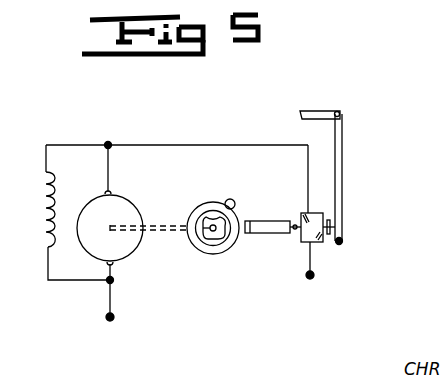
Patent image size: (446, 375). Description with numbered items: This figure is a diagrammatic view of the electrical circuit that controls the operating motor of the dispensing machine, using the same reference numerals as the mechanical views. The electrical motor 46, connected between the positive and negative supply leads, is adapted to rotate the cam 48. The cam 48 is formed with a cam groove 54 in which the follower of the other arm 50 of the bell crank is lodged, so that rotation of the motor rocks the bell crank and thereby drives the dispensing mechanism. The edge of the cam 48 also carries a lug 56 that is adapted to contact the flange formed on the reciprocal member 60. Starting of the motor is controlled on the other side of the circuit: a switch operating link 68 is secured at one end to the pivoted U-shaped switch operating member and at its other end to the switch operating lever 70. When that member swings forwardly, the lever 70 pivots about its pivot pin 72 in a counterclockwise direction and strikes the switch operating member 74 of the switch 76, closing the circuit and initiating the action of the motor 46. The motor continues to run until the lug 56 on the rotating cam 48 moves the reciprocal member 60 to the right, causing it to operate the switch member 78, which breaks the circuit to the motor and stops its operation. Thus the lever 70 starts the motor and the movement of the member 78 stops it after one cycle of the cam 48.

The electrical motor 46 is at (130, 252).
The cam 48 is at (200, 204).
The other arm of the bell crank 50 is at (214, 250).
The cam groove 54 is at (213, 254).
The lug 56 is at (236, 208).
The reciprocal member 60 is at (276, 221).
The switch operating link 68 is at (316, 111).
The switch operating lever 70 is at (346, 182).
The pivot pin 72 is at (343, 243).
The switch operating member 74 is at (323, 241).
The switch 76 is at (297, 244).
The switch member 78 is at (248, 235).